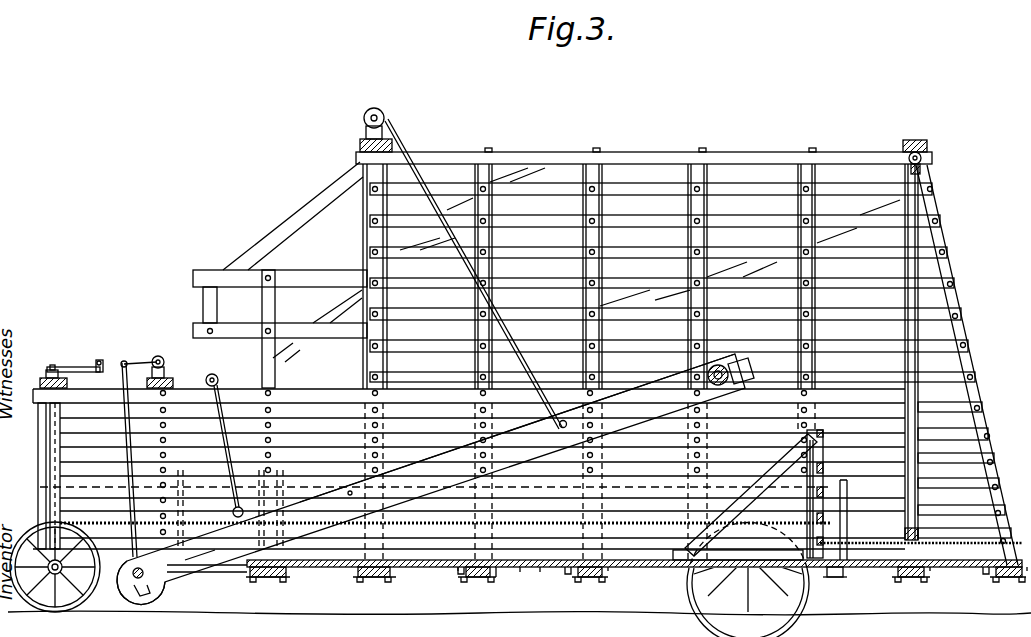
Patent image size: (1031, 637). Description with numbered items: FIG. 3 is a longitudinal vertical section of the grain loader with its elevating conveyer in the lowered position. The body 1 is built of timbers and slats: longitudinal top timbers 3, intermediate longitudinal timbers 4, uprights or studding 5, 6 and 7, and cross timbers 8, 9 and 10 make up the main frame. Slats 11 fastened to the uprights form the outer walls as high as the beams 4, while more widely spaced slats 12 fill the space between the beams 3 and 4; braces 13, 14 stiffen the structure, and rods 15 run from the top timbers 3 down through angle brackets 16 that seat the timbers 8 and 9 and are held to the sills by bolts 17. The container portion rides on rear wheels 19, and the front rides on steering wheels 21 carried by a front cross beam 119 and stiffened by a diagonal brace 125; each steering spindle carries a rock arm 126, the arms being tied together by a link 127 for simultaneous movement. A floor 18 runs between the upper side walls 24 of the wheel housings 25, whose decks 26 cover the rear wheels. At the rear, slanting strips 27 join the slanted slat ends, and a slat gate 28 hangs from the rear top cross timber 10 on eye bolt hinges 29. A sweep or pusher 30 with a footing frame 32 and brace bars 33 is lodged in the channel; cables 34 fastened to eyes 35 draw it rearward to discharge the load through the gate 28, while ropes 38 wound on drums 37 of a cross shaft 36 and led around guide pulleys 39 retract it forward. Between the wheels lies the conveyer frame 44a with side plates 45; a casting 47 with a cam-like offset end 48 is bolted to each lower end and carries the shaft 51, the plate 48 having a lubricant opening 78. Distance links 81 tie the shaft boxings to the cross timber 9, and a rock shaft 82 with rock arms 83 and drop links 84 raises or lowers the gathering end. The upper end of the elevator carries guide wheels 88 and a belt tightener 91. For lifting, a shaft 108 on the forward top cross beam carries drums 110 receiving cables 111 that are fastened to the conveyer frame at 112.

The body 1 is at (630, 158).
The longitudinal top timbers 3 is at (645, 348).
The intermediate longitudinal timbers 4 is at (612, 385).
The uprights or studding 5 is at (700, 208).
The uprights or studding 6 is at (276, 305).
The uprights or studding 7 is at (42, 463).
The cross timbers 8 is at (588, 570).
The cross timbers 9 is at (273, 578).
The cross timbers 10 is at (173, 383).
The strips or slats 11 is at (303, 427).
The strips or slats 12 is at (762, 196).
The braces 13 is at (645, 296).
The braces 14 is at (428, 234).
The rods 15 is at (496, 238).
The angle brackets 16 is at (480, 578).
The bolts 17 is at (462, 576).
The floor 18 is at (538, 569).
The rear wheels 19 is at (777, 612).
The front steering wheels 21 is at (28, 612).
The upper side walls 24 is at (443, 530).
The housings 25 is at (850, 517).
The decks 26 is at (667, 489).
The slanting beams or strips 27 is at (967, 329).
The gate 28 is at (918, 276).
The eye bolt hinges 29 is at (925, 158).
The sweep or pusher structure 30 is at (815, 430).
The footing extension 32 is at (690, 556).
The brace bars 33 is at (737, 503).
The ropes or cables 34 is at (1020, 540).
The eyes 35 is at (835, 578).
The cross shaft 36 is at (212, 374).
The drums or sheaves 37 is at (219, 382).
The ropes 38 is at (220, 457).
The guide pulleys 39 is at (238, 518).
The conveyer frame 44a is at (426, 490).
The side plates 45 is at (431, 479).
The casting 47 is at (184, 556).
The offset end 48 is at (120, 586).
The shaft 51 is at (143, 573).
The opening 78 is at (149, 591).
The distance links 81 is at (233, 574).
The rock shaft 82 is at (159, 360).
The rock arms 83 is at (124, 362).
The drop links 84 is at (122, 380).
The guide wheels 88 is at (704, 366).
The belt tightener structure 91 is at (752, 366).
The shaft 108 is at (381, 113).
The drums 110 is at (364, 122).
The rope or cable 111 is at (513, 335).
The cable attachment 112 is at (567, 423).
The cross beam 119 is at (42, 383).
The diagonal brace 125 is at (53, 445).
The rock arm 126 is at (68, 367).
The rod or link 127 is at (97, 361).